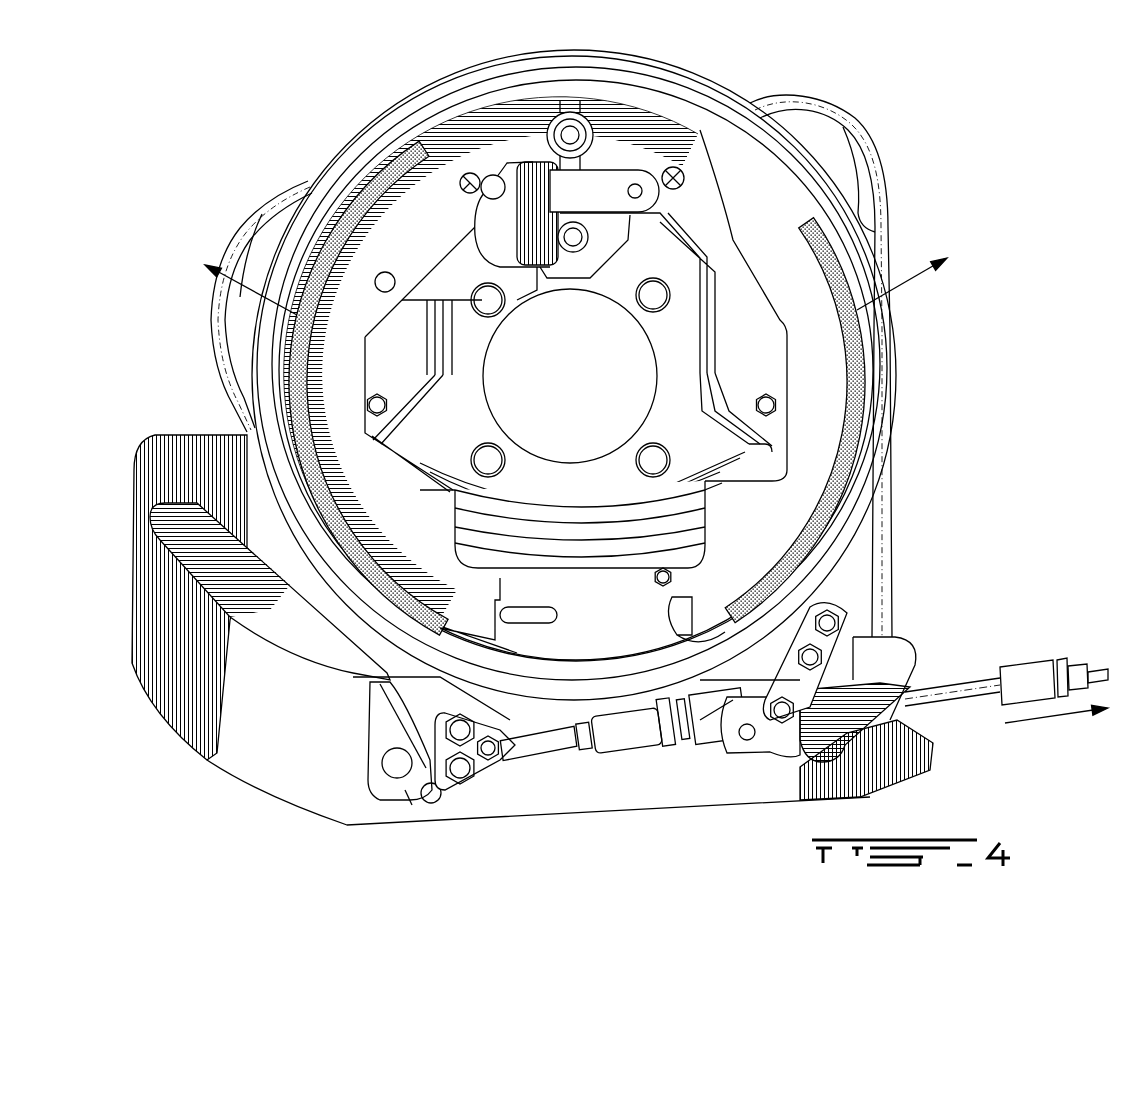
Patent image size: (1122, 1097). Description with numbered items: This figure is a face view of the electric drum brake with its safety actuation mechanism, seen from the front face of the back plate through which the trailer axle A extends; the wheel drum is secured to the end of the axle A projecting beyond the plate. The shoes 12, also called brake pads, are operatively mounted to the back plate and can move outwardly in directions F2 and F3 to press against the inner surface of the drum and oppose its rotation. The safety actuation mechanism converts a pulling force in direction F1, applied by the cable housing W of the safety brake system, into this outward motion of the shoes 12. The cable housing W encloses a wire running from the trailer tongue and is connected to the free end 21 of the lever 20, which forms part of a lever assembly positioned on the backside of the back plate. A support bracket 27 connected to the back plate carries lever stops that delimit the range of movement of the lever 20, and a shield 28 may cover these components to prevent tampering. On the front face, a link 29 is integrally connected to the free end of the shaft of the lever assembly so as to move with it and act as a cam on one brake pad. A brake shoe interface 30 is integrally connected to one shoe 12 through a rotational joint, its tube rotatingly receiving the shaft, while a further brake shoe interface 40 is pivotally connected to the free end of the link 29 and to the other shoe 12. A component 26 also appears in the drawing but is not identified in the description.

The shoes 12 is at (333, 360).
The lever 20 is at (450, 787).
The free end 21 is at (368, 750).
The strap 26 is at (227, 329).
The support bracket 27 is at (267, 610).
The shield 28 is at (232, 742).
The link 29 is at (523, 197).
The brake shoe interface 30 is at (463, 273).
The further brake shoe interface 40 is at (603, 187).
The axle A is at (578, 388).
The cable housing W is at (968, 686).
The direction F1 is at (1056, 724).
The direction F2 is at (212, 298).
The direction F3 is at (910, 283).